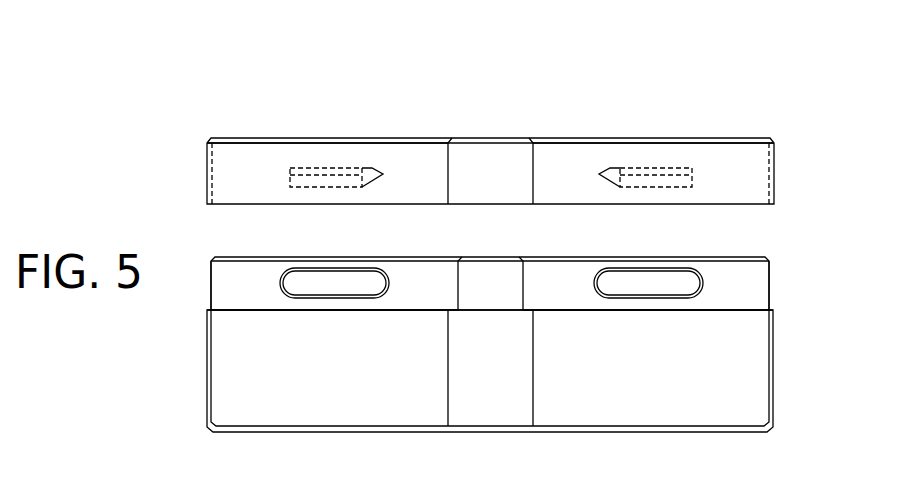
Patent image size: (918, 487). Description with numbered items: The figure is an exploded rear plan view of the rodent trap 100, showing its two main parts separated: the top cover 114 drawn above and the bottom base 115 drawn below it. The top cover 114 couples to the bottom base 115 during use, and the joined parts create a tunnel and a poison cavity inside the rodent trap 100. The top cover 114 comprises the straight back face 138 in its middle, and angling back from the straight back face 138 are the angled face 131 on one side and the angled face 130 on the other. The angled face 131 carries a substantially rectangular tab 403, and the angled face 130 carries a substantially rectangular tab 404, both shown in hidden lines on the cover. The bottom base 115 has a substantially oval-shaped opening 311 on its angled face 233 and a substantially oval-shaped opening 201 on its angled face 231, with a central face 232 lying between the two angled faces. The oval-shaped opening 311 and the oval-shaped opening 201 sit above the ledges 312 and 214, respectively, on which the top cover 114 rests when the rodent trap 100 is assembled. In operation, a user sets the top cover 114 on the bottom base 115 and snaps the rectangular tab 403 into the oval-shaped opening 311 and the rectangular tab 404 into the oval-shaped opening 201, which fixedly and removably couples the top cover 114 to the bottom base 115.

The rodent trap 100 is at (495, 96).
The top cover 114 is at (758, 129).
The bottom base 115 is at (786, 293).
The angled face 130 is at (233, 190).
The straight back face 138 is at (472, 190).
The angled face 131 is at (710, 190).
The substantially rectangular tab 404 is at (323, 168).
The substantially rectangular tab 403 is at (658, 168).
The ledge 214 is at (265, 310).
The ledge 312 is at (717, 308).
The substantially oval-shaped opening 201 is at (322, 290).
The substantially oval-shaped opening 311 is at (657, 290).
The angled face 231 is at (324, 406).
The middle section of second housing portion 232 is at (472, 378).
The angled face 233 is at (622, 406).